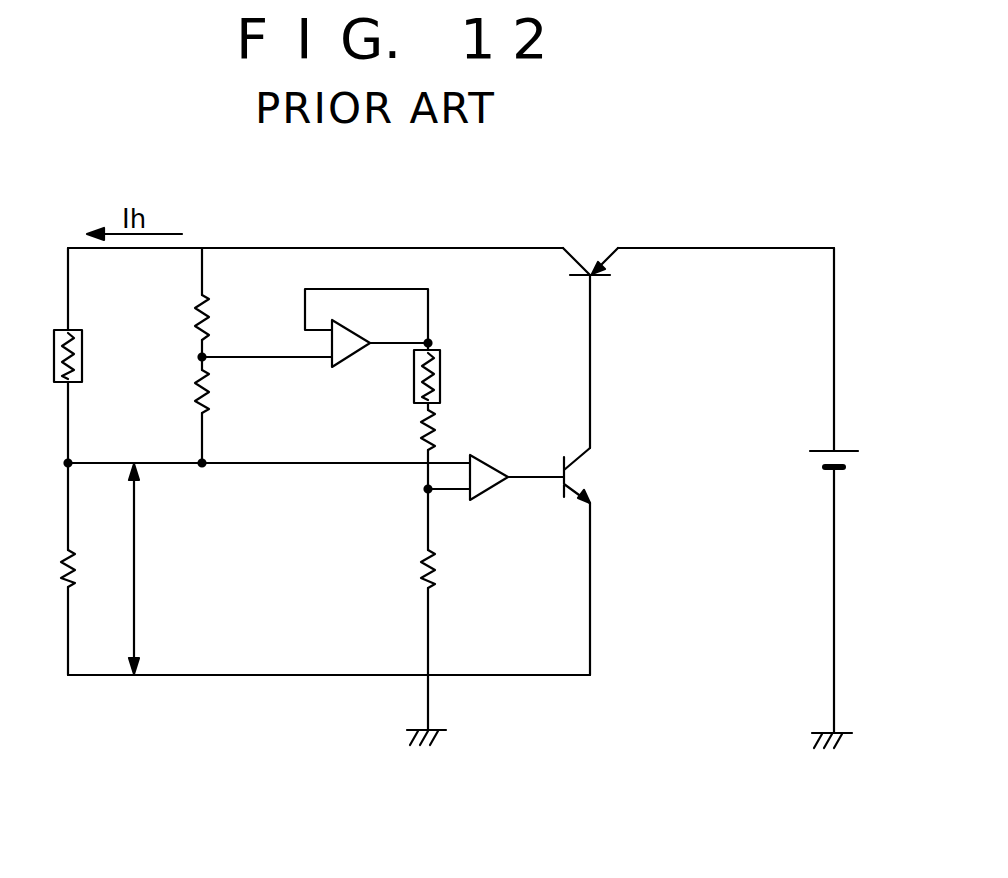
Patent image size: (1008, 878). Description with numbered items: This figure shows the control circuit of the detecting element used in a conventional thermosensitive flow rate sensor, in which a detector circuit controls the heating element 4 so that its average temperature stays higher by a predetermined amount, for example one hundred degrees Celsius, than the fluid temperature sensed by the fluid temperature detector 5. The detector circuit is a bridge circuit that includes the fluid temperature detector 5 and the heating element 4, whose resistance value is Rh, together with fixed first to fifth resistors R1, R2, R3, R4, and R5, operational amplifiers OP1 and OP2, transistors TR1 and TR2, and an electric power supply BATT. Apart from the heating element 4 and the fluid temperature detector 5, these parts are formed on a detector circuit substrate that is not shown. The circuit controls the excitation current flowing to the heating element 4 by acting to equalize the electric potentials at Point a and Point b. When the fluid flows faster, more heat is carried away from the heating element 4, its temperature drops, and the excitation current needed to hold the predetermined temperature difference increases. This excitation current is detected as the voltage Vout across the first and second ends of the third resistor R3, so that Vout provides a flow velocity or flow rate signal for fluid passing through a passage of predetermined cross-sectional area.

The heating element 4 is at (84, 356).
The fluid temperature detector 5 is at (441, 372).
The resistance value of the heating element Rh is at (102, 394).
The first resistor R1 is at (433, 432).
The second resistor R2 is at (433, 560).
The third resistor R3 is at (72, 560).
The fourth resistor R4 is at (210, 316).
The fifth resistor R5 is at (210, 388).
The operational amplifier OP1 is at (496, 458).
The operational amplifier OP2 is at (352, 366).
The transistor TR1 is at (590, 470).
The transistor TR2 is at (566, 262).
The electric power supply BATT is at (838, 448).
The Point a is at (202, 463).
The Point b is at (427, 489).
The voltage Vout is at (176, 571).